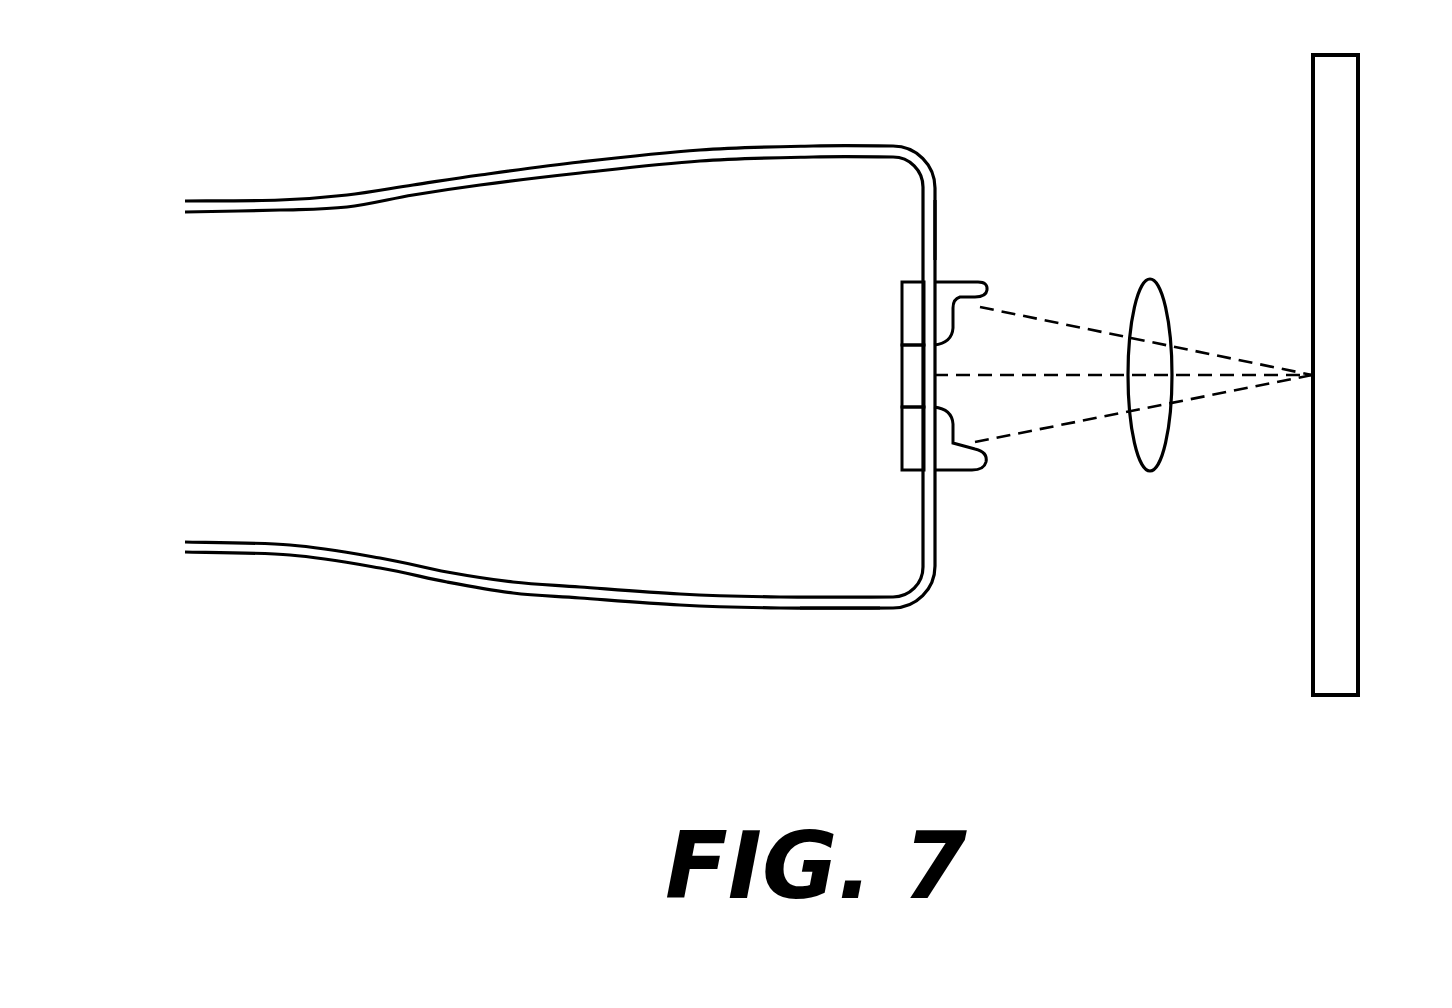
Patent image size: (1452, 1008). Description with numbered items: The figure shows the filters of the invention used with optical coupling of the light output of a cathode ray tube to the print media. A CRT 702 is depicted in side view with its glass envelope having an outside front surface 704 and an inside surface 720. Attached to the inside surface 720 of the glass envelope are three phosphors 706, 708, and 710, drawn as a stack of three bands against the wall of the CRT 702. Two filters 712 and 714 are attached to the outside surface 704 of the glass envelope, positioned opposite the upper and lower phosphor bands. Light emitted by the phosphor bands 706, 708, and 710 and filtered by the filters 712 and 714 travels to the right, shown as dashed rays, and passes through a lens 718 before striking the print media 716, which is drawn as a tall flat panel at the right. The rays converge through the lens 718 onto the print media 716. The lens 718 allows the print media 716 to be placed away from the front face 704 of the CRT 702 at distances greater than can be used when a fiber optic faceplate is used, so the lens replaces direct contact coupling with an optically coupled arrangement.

The CRT 702 is at (668, 160).
The outside front surface 704 is at (935, 228).
The phosphor 706 is at (910, 298).
The phosphor 708 is at (912, 378).
The phosphor 710 is at (912, 460).
The filter 712 is at (952, 303).
The filter 714 is at (943, 427).
The print media 716 is at (1357, 662).
The lens 718 is at (1160, 447).
The inside surface 720 is at (923, 565).